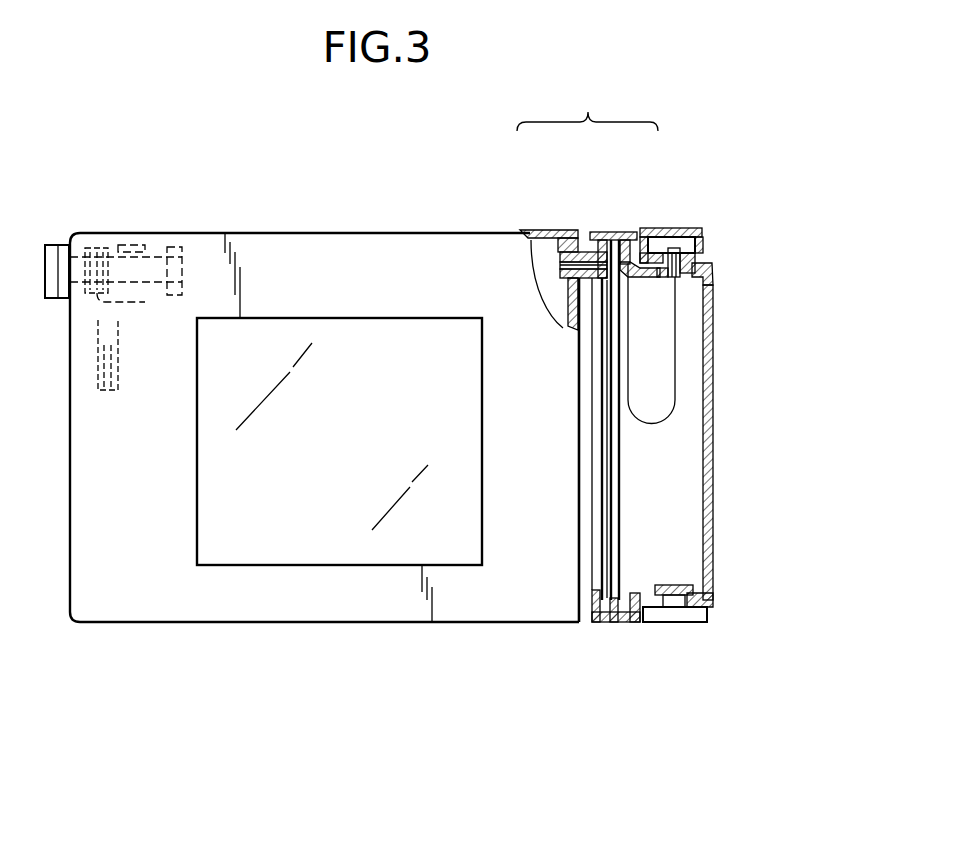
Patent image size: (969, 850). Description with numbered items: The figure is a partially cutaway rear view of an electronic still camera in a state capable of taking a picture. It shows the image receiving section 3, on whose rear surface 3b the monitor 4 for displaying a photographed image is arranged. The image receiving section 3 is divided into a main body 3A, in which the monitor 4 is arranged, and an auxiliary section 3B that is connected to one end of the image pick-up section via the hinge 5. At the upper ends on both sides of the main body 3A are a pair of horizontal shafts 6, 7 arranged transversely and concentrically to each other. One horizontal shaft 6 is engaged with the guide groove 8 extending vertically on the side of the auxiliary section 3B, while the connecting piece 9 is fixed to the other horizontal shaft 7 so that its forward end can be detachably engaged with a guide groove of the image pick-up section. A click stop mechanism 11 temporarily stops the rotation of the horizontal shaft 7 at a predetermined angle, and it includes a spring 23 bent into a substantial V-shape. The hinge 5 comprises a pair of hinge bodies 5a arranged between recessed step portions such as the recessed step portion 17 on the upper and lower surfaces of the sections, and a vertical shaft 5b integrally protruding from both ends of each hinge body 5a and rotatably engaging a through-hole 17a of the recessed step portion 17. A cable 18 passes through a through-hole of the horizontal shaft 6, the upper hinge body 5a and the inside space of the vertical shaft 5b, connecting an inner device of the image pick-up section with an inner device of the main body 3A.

The image receiving section 3 is at (587, 102).
The main body of the image receiving section 3A is at (536, 218).
The auxiliary section 3B is at (622, 218).
The rear surface 3b is at (372, 245).
The monitor 4 is at (297, 320).
The hinge 5 is at (669, 218).
The hinge body 5a is at (690, 230).
The vertical shaft 5b is at (686, 285).
The horizontal shaft 6 is at (578, 300).
The horizontal shaft 7 is at (152, 257).
The guide groove 8 is at (605, 418).
The connecting piece 9 is at (63, 242).
The click stop mechanism 11 is at (88, 312).
The recessed step portion 17 is at (704, 256).
The through-hole 17a is at (695, 275).
The cable 18 is at (652, 427).
The spring 23 is at (118, 385).